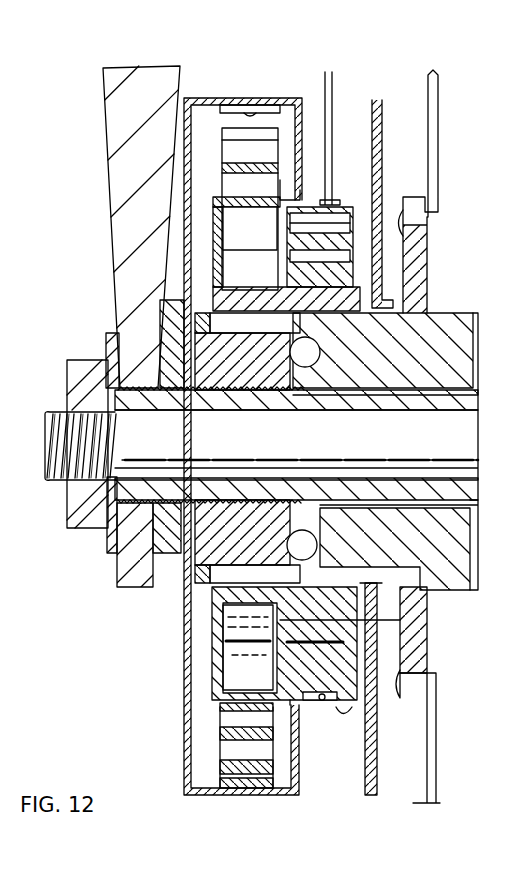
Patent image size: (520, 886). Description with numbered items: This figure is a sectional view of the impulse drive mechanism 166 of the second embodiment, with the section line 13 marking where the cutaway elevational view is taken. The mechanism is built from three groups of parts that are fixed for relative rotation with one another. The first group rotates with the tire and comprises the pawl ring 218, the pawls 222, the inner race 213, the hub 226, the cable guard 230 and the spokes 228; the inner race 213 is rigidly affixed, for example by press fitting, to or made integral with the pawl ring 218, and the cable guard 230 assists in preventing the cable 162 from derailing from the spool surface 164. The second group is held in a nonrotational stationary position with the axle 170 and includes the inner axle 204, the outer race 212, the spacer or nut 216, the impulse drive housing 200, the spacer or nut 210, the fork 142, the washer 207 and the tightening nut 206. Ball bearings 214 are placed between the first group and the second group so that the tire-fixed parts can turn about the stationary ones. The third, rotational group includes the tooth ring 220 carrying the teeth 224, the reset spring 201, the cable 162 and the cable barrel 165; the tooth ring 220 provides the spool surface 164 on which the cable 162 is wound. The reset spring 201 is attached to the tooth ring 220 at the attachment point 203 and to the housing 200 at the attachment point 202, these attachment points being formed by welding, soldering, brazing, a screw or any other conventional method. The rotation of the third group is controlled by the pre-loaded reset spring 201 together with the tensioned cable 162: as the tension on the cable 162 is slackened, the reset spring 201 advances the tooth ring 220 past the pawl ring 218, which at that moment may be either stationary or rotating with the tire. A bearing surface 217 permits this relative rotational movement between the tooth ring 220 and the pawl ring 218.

The section line 13— 13 is at (248, 80).
The fork 142 is at (128, 103).
The impulse drive mechanism 166 is at (78, 154).
The axle 170 is at (73, 327).
The impulse drive housing 200 is at (185, 736).
The reset spring 201 is at (228, 752).
The attachment point 202 is at (249, 112).
The attachment point 203 is at (218, 711).
The inner axle 204 is at (46, 430).
The tightening nut 206 is at (92, 513).
The washer 207 is at (110, 553).
The spacer or nut 210 is at (170, 568).
The outer race 212 is at (265, 372).
The inner race 213 is at (393, 367).
The ball bearings 214 is at (322, 544).
The spacer or nut 216 is at (265, 538).
The bearing surface 217 is at (400, 622).
The pawl ring 218 is at (327, 618).
The tooth ring 220 is at (333, 680).
The pawls 222 is at (235, 658).
The teeth 224 is at (268, 240).
The cable barrel 165 is at (282, 254).
The cable 162 is at (334, 100).
The spool surface 164 is at (350, 700).
The hub 226 is at (432, 644).
The spokes 228 is at (436, 136).
The cable guard 230 is at (365, 767).